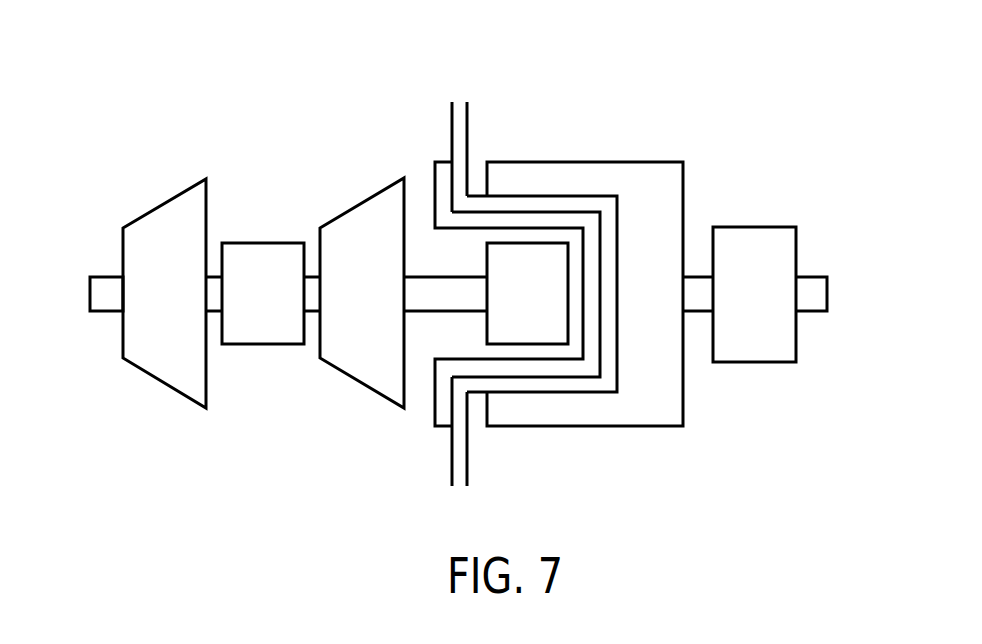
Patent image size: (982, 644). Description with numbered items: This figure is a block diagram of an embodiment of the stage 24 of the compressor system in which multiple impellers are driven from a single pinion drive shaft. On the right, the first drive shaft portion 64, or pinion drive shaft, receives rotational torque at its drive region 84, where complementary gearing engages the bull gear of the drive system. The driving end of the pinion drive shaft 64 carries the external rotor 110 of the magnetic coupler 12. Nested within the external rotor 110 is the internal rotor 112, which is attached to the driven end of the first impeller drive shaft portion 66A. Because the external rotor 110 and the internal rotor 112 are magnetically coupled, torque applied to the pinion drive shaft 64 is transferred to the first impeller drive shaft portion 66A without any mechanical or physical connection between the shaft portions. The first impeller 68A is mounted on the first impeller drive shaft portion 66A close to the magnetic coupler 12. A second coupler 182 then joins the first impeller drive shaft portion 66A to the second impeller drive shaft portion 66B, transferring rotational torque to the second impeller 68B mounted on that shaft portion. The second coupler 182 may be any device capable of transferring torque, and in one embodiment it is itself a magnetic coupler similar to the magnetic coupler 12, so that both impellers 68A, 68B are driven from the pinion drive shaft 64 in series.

The magnetic coupler 12 is at (599, 138).
The stage 24 is at (565, 96).
The first drive shaft portion 64 is at (829, 292).
The first impeller drive shaft portion 66A is at (425, 312).
The second impeller drive shaft portion 66B is at (108, 313).
The first impeller 68A is at (363, 202).
The second impeller 68B is at (166, 202).
The drive region 84 is at (758, 227).
The external rotor 110 is at (684, 178).
The internal rotor 112 is at (487, 267).
The second coupler 182 is at (263, 243).